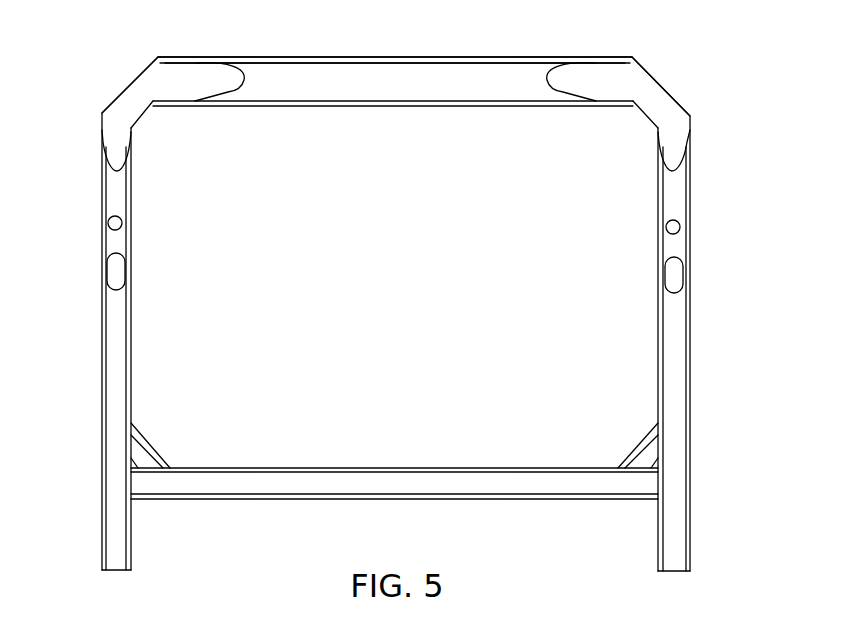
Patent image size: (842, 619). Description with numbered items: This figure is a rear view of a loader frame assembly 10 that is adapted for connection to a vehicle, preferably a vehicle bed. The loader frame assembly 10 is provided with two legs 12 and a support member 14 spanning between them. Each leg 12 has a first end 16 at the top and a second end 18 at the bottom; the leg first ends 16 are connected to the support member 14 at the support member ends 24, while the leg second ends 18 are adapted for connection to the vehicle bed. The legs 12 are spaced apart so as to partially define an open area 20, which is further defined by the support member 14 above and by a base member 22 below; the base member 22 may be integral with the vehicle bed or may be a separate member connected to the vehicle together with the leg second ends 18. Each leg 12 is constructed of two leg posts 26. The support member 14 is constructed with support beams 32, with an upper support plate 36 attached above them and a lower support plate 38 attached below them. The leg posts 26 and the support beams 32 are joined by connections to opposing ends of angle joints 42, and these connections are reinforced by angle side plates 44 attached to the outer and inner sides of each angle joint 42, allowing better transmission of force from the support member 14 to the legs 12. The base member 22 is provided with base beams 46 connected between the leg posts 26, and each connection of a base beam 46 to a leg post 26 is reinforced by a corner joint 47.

The loader frame assembly 10 is at (738, 133).
The leg 12 is at (107, 543).
The support member 14 is at (433, 82).
The leg first end 16 is at (117, 158).
The leg second end 18 is at (112, 562).
The open area 20 is at (372, 293).
The base member 22 is at (352, 485).
The support member end 24 is at (232, 83).
The leg post 26 is at (112, 493).
The support beam 32 is at (307, 87).
The upper support plate 36 is at (330, 57).
The lower support plate 38 is at (393, 106).
The angle joint 42 is at (130, 86).
The angle side plate 44 is at (137, 96).
The base beam 46 is at (258, 482).
The corner joint 47 is at (140, 455).